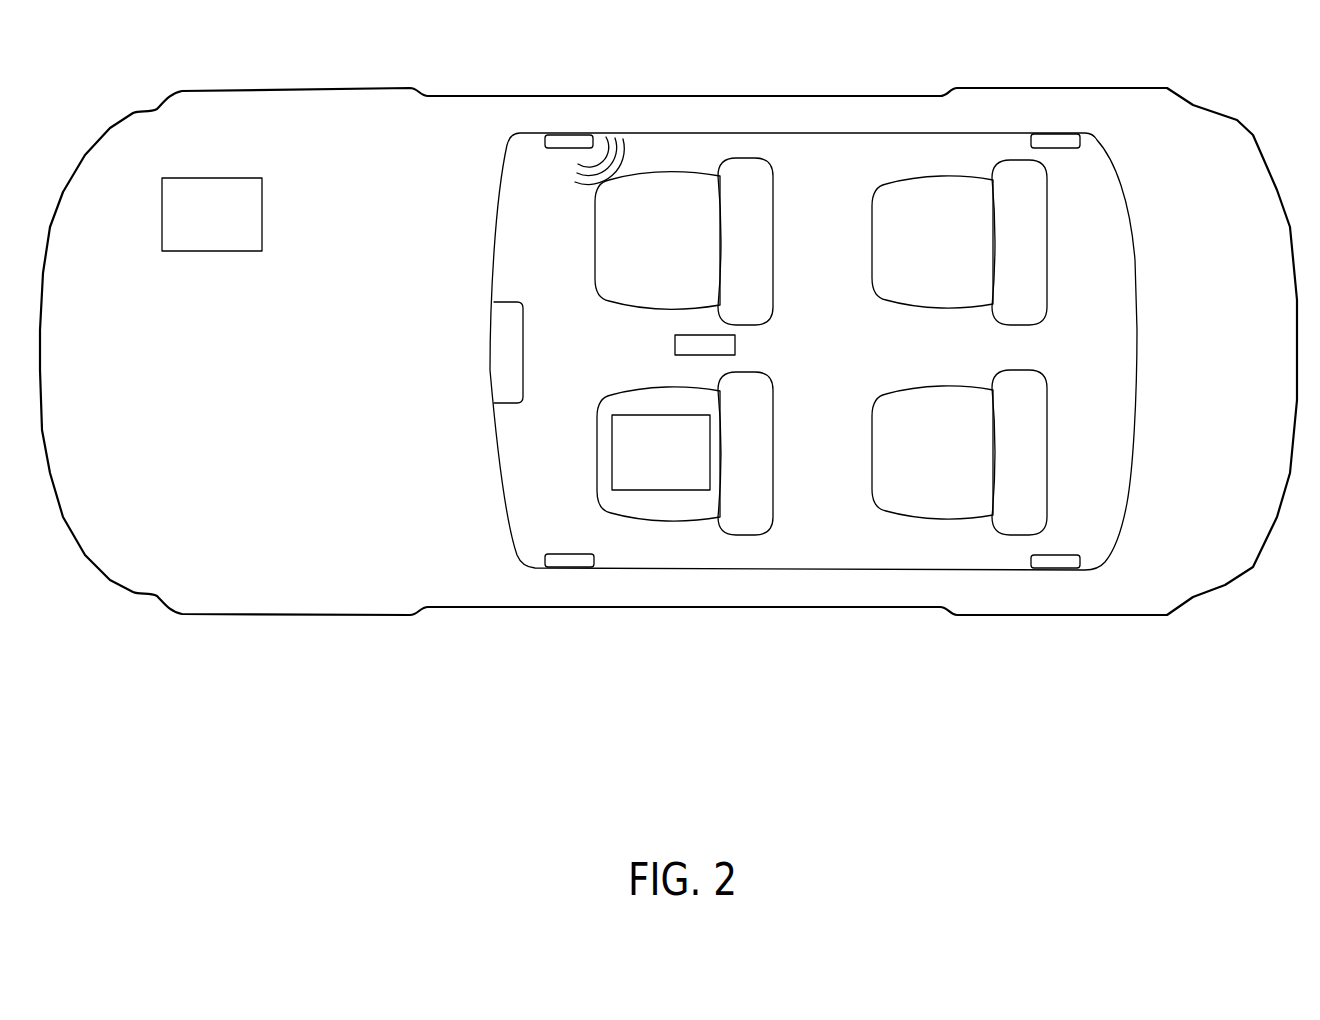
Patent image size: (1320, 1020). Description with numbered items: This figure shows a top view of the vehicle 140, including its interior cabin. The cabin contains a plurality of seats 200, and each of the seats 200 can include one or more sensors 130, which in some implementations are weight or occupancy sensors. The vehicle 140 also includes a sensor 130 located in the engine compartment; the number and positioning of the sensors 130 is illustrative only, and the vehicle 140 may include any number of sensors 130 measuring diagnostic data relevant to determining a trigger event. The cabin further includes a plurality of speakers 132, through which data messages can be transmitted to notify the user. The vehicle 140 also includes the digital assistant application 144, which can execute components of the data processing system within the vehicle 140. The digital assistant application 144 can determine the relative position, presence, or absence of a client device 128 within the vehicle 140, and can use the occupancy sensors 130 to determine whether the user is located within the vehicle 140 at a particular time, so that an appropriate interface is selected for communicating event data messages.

The client device 128 is at (735, 343).
The sensor 130 is at (436, 334).
The speaker 132 is at (568, 139).
The vehicle 140 is at (1168, 94).
The digital assistant application 144 is at (505, 344).
The seat 200 is at (773, 503).